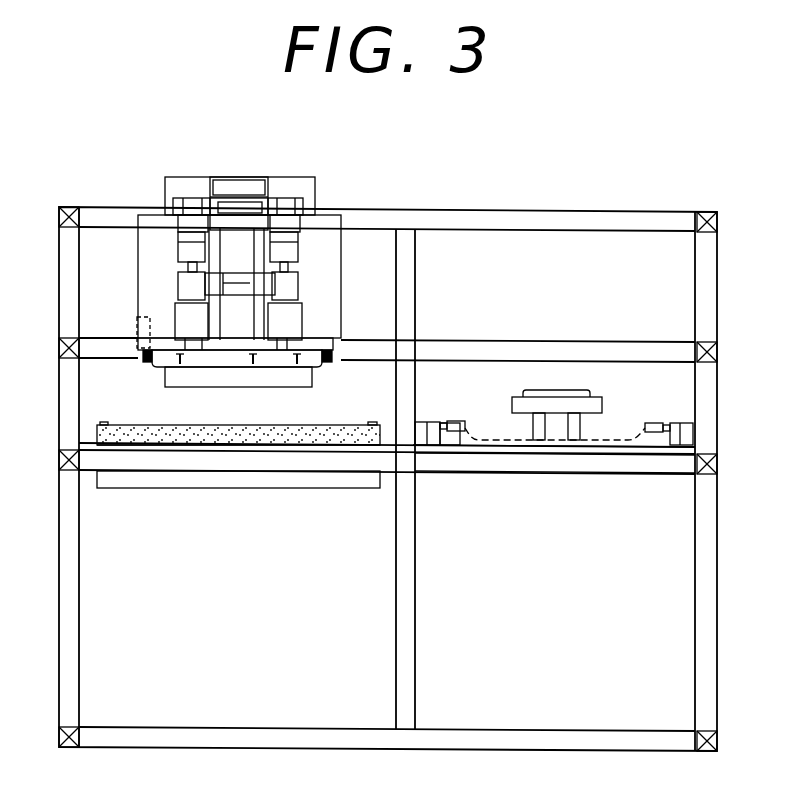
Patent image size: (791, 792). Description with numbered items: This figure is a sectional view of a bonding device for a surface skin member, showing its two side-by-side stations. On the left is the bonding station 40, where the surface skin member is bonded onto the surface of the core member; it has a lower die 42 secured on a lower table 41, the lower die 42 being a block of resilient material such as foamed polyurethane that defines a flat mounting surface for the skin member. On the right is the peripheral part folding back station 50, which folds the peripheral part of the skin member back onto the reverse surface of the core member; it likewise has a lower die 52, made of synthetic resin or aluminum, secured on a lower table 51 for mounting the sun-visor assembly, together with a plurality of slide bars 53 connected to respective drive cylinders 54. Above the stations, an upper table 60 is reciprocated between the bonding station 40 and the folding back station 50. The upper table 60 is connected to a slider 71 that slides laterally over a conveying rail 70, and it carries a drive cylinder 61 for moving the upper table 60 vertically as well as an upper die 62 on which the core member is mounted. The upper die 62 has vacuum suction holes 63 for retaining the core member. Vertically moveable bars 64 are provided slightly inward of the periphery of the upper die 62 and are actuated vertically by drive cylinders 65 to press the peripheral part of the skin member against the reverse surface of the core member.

The bonding station 40 is at (243, 542).
The lower table 41 is at (317, 457).
The lower die 42 is at (202, 433).
The peripheral part folding back station 50 is at (567, 546).
The lower table 51 is at (623, 463).
The lower die 52 is at (505, 440).
The slide bars 53 is at (455, 422).
The drive cylinders 54 is at (426, 420).
The upper table 60 is at (305, 342).
The drive cylinder 61 is at (240, 243).
The upper die 62 is at (240, 358).
The vacuum suction holes 63 is at (175, 352).
The vertically moveable bars 64 is at (148, 360).
The drive cylinders 65 is at (148, 342).
The conveying rail 70 is at (525, 350).
The slider 71 is at (167, 187).